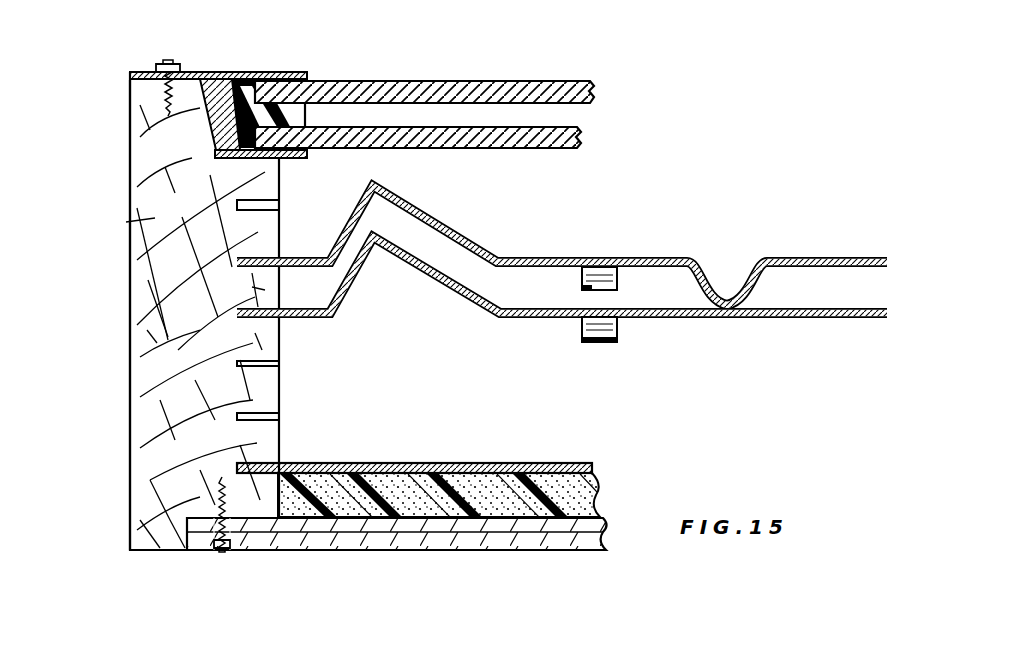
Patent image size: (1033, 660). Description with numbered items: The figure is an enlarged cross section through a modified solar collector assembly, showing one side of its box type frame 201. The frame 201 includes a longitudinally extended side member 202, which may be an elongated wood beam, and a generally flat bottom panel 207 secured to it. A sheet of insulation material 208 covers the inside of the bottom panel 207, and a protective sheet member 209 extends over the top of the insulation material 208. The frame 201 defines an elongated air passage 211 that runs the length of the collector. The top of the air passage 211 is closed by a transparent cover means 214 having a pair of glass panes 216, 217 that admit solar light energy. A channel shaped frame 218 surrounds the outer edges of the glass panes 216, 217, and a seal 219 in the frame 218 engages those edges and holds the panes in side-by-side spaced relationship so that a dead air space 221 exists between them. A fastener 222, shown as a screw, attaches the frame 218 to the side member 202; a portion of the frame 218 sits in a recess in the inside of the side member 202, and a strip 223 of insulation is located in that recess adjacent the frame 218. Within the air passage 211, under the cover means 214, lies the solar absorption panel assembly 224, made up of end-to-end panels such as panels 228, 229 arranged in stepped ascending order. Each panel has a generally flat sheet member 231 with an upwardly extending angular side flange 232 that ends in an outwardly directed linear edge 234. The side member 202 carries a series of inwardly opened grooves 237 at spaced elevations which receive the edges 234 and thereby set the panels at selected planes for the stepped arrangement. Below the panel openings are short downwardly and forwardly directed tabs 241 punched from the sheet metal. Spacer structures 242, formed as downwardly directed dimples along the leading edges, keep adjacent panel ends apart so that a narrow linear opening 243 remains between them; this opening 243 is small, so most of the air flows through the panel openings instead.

The frame 201 is at (327, 288).
The side member 202 is at (150, 222).
The bottom panel 207 is at (428, 537).
The insulation material 208 is at (585, 490).
The protective sheet member 209 is at (487, 463).
The air passage 211 is at (457, 422).
The transparent cover means 214 is at (457, 105).
The glass pane 216 is at (492, 80).
The glass pane 217 is at (548, 150).
The frame 218 is at (208, 75).
The seal 219 is at (241, 82).
The dead air space 221 is at (560, 115).
The fastener 222 is at (172, 62).
The strip of insulation 223 is at (150, 148).
The solar absorption panel assembly 224 is at (562, 275).
The panel 228 is at (562, 306).
The panel 229 is at (562, 245).
The sheet member 231 is at (697, 318).
The side flange 232 is at (347, 293).
The linear edge 234 is at (280, 318).
The grooves 237 is at (281, 203).
The tab 241 is at (581, 331).
The spacer structure 242 is at (767, 285).
The opening 243 is at (560, 287).